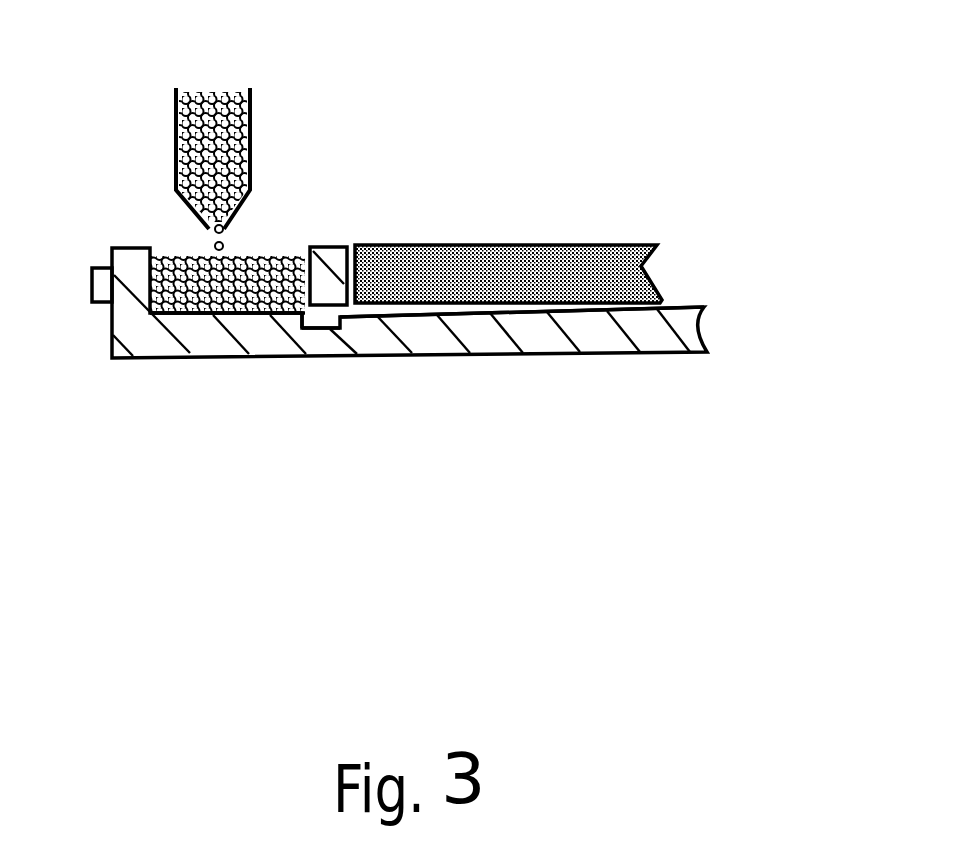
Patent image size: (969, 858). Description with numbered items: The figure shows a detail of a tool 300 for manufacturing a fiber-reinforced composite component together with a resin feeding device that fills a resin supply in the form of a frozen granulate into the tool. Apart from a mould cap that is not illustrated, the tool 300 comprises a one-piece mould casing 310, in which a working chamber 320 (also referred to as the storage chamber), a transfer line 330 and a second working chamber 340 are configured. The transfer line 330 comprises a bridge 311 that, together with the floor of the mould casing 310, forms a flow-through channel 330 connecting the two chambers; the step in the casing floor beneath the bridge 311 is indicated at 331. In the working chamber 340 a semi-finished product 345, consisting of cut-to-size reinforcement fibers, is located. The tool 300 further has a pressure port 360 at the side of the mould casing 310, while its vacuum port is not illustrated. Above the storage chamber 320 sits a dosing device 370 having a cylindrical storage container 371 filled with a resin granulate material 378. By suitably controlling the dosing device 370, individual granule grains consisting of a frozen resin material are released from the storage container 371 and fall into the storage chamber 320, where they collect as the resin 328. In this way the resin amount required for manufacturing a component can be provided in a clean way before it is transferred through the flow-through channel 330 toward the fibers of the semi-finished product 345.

The tool 300 is at (740, 153).
The mould casing 310 is at (707, 326).
The bridge 311 is at (328, 243).
The working chamber 320 is at (300, 362).
The resin 328 is at (260, 250).
The transfer line 330 is at (340, 362).
The step edge 331 is at (293, 308).
The working chamber 340 is at (353, 362).
The semi-finished product 345 is at (521, 245).
The pressure port 360 is at (92, 286).
The dosing device 370 is at (200, 129).
The cylindrical storage container 371 is at (252, 147).
The resin granulate material 378 is at (216, 97).